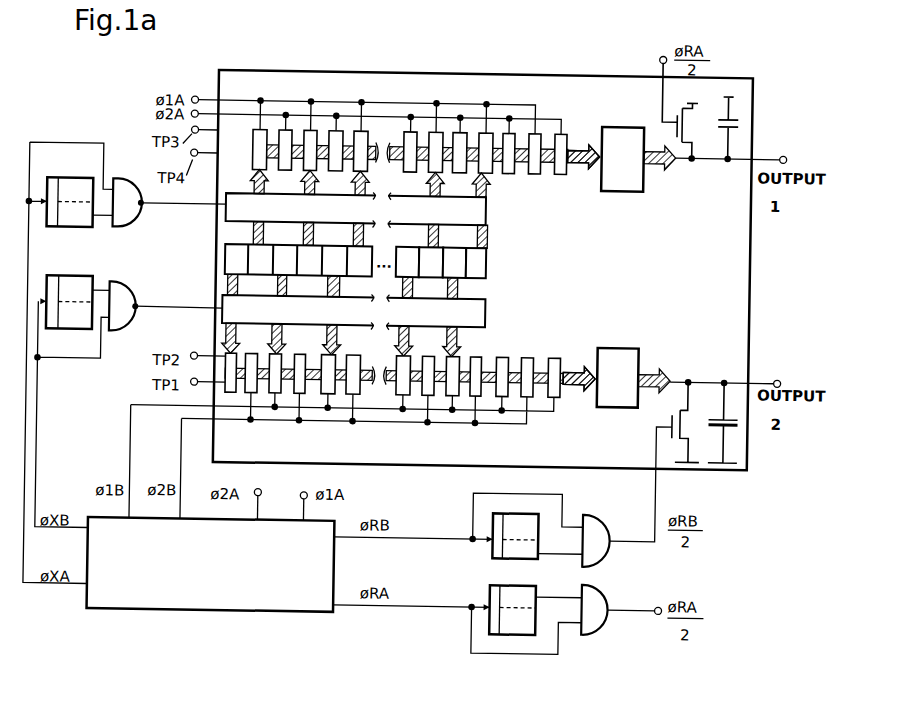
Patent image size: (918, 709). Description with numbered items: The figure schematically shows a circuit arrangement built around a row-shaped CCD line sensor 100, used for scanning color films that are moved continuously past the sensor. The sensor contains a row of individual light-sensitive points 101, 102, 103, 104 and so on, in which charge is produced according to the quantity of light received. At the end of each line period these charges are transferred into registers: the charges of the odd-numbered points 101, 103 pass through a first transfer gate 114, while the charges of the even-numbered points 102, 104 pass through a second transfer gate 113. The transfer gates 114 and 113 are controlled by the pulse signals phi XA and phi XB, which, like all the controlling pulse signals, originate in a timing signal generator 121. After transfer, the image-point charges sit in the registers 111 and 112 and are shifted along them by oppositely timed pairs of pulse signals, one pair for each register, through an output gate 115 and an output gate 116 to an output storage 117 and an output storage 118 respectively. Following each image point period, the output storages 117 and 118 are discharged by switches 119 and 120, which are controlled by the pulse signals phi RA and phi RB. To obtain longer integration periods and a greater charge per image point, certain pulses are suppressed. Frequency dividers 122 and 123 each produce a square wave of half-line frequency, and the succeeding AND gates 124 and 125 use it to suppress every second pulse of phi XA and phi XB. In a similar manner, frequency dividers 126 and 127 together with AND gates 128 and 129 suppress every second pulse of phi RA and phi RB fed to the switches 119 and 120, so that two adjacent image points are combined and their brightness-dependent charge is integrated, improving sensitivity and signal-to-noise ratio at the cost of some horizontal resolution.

The row-shaped CCD 100 is at (350, 83).
The light-sensitive point 101 is at (475, 263).
The light-sensitive point 102 is at (454, 263).
The light-sensitive point 103 is at (431, 262).
The light-sensitive point 104 is at (407, 262).
The register 111 is at (565, 354).
The register 112 is at (560, 167).
The second transfer gate 113 is at (489, 309).
The first transfer gate 114 is at (488, 206).
The output gate 115 is at (603, 342).
The output gate 116 is at (605, 186).
The output storage 117 is at (716, 423).
The output storage 118 is at (720, 128).
The switch 119 is at (678, 410).
The switch 120 is at (676, 118).
The timing signal generator 121 is at (212, 610).
The frequency divider 122 is at (56, 278).
The frequency divider 123 is at (57, 180).
The AND gate 124 is at (124, 283).
The AND gate 125 is at (131, 174).
The frequency divider 126 is at (522, 631).
The frequency divider 127 is at (543, 554).
The AND gate 128 is at (604, 580).
The AND gate 129 is at (597, 510).